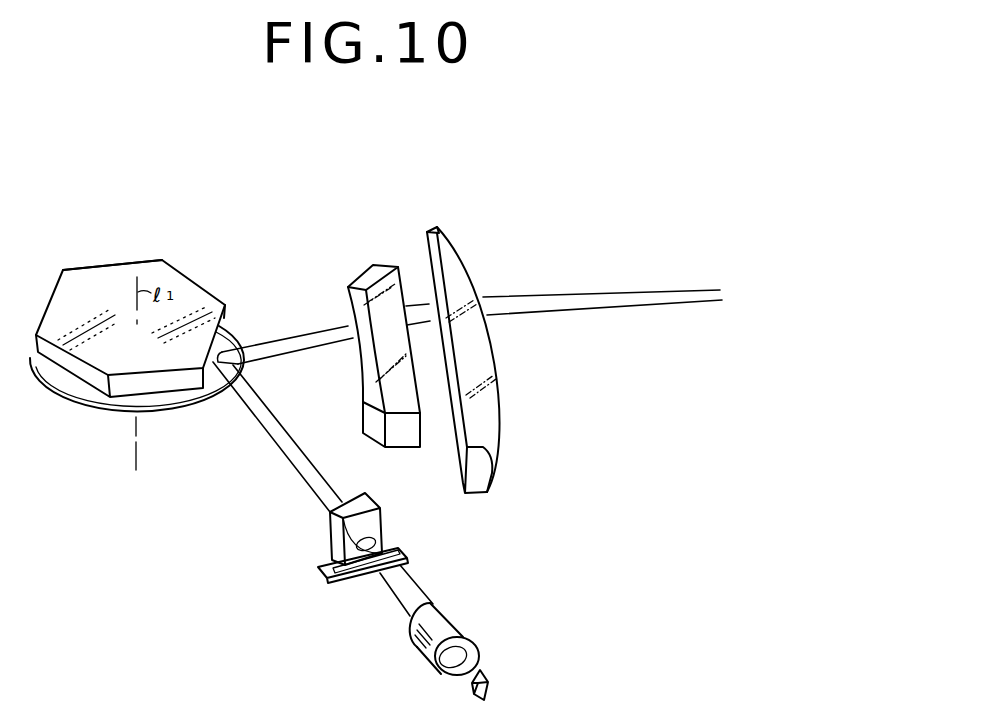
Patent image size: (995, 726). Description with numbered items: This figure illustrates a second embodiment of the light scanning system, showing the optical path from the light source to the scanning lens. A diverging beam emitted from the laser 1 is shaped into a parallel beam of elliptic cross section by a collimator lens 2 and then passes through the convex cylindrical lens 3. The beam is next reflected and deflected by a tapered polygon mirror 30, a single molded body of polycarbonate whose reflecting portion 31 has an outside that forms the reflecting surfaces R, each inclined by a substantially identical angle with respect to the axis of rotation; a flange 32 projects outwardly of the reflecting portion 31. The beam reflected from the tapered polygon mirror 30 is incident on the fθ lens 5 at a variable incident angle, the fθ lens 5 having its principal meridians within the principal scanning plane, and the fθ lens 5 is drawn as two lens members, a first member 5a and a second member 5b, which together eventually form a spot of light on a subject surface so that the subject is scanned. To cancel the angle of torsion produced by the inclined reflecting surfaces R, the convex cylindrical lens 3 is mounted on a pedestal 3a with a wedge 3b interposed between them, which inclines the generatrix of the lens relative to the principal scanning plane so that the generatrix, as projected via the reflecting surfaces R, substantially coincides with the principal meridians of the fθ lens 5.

The laser 1 is at (490, 690).
The collimator lens 2 is at (443, 620).
The convex cylindrical lens 3 is at (330, 513).
The pedestal 3a is at (318, 570).
The wedge 3b is at (397, 549).
The fθ lens 5 is at (424, 313).
The first scanning lens 5a is at (385, 273).
The second scanning lens 5b is at (463, 338).
The tapered polygon mirror 30 is at (205, 287).
The reflecting portion 31 is at (102, 270).
The flange 32 is at (62, 378).
The reflecting surfaces R is at (206, 435).